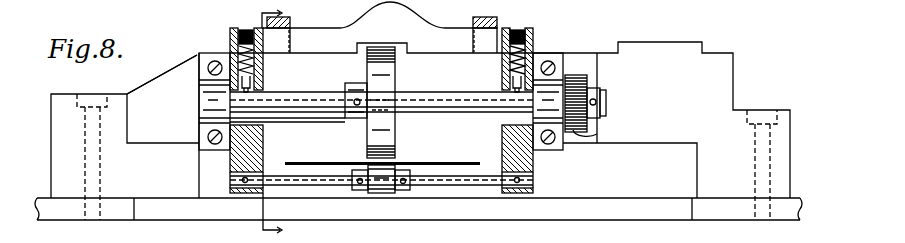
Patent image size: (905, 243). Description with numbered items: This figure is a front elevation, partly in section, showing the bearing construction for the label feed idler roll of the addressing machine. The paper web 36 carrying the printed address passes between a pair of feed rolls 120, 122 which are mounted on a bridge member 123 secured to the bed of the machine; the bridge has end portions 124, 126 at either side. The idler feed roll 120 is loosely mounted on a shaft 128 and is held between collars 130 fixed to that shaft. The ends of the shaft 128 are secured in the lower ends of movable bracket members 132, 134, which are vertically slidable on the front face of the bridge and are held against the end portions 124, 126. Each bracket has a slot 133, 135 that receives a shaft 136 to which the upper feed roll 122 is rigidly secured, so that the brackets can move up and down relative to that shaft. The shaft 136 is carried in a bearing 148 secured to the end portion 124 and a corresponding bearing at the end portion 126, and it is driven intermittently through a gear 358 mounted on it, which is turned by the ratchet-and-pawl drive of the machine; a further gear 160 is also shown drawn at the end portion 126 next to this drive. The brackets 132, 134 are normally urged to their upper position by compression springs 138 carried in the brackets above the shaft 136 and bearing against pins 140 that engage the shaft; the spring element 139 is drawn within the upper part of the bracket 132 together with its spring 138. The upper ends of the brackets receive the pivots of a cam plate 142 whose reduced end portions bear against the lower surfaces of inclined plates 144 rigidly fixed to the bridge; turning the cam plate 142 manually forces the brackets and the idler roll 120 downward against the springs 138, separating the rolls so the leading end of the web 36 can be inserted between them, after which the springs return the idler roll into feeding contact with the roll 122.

The web of paper 36 is at (450, 158).
The feed roll 120 is at (383, 191).
The feed roll 122 is at (397, 135).
The bridge member 123 is at (170, 133).
The end portion of the bridge member 124 is at (192, 61).
The end portion of the bridge member 126 is at (572, 52).
The shaft 128 is at (463, 184).
The collars 130 is at (358, 187).
The bracket member 132 is at (235, 164).
The slot 133 is at (250, 121).
The bracket member 134 is at (535, 165).
The slot 135 is at (510, 121).
The shaft 136 is at (456, 100).
The compression springs 138 is at (533, 52).
The spring 139 is at (258, 65).
The pins 140 is at (262, 83).
The cam plate 142 is at (381, 27).
The inclined plates 144 is at (262, 22).
The bearing 148 is at (208, 102).
The gear 160 is at (556, 78).
The gear 358 is at (597, 134).